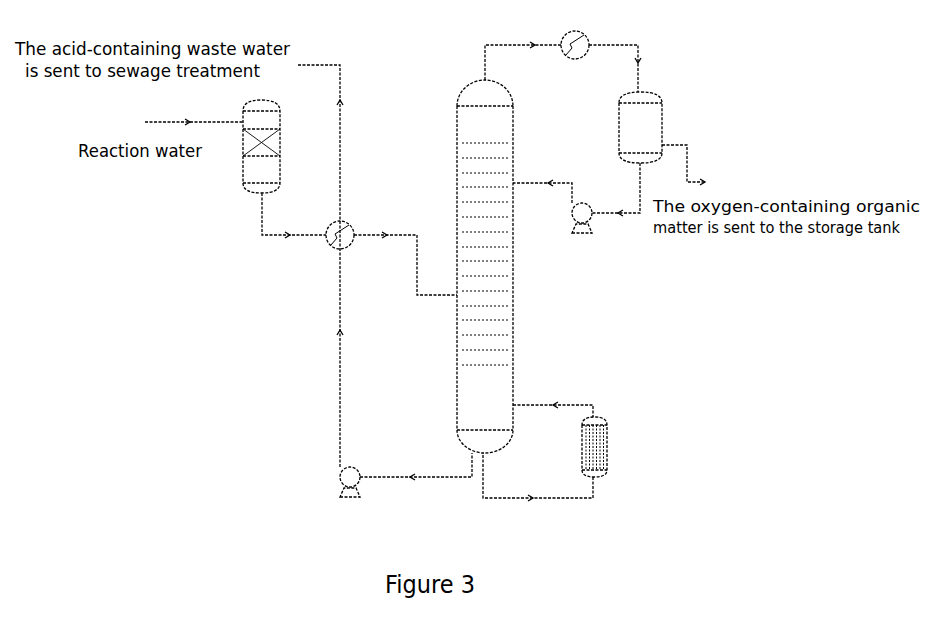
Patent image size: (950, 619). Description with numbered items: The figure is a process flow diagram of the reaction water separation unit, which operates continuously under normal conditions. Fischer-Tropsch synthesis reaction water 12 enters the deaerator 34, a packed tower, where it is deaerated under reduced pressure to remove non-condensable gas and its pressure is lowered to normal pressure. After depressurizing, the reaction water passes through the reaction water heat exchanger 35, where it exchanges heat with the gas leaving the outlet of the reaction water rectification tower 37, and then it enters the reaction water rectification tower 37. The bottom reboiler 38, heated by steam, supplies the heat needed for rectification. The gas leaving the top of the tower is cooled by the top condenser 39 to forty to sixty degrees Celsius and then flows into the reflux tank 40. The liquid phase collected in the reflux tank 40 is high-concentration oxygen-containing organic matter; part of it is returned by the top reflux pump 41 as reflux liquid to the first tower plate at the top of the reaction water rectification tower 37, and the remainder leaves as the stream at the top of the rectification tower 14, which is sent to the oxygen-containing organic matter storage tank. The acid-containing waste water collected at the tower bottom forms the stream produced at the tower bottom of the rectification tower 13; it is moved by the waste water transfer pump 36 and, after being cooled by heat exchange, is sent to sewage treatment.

The Fischer-Tropsch synthesis reaction water 12 is at (194, 114).
The stream produced at the tower bottom of the rectification tower 13 is at (334, 266).
The stream at the top of the rectification tower 14 is at (689, 165).
The deaerator 34 is at (243, 187).
The reaction water heat exchanger 35 is at (338, 252).
The waste water transfer pump 36 is at (352, 467).
The reaction water rectification tower 37 is at (515, 305).
The bottom reboiler 38 is at (607, 443).
The top condenser 39 is at (576, 58).
The reflux tank 40 is at (620, 152).
The top reflux pump 41 is at (588, 231).